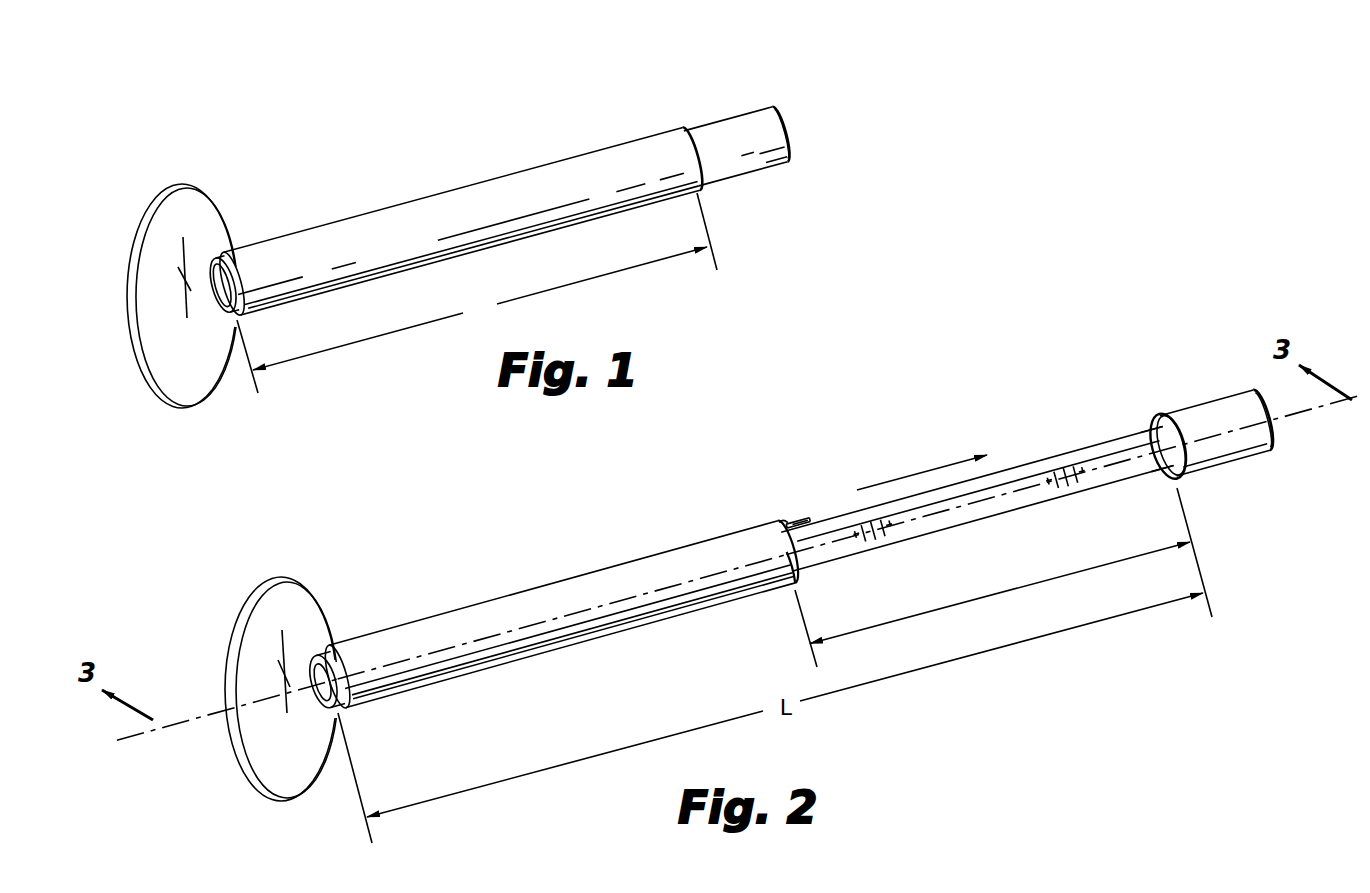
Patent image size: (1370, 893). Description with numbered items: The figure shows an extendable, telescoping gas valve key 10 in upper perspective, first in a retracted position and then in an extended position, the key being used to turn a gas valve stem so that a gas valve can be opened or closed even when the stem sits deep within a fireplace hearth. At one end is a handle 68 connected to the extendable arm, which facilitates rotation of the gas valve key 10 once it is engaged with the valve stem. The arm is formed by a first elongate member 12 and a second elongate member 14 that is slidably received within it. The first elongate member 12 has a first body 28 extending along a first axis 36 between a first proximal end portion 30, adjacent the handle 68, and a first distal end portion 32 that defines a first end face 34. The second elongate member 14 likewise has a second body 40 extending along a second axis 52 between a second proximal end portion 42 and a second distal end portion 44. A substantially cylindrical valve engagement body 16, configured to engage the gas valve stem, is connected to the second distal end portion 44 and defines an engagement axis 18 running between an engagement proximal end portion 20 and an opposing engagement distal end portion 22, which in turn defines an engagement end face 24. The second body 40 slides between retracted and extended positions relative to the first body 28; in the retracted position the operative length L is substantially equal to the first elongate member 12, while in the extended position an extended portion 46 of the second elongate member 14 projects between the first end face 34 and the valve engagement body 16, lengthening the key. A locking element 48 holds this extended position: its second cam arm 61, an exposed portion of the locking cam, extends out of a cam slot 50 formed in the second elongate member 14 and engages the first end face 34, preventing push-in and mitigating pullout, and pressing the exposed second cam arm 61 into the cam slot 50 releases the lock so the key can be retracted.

In FIG. 1, the gas valve key 10 is at (302, 112).
In FIG. 1, the first elongate member 12 is at (470, 166).
In FIG. 2, the first elongate member 12 is at (530, 582).
In FIG. 2, the second elongate member 14 is at (1078, 441).
In FIG. 1, the valve engagement body 16 is at (727, 119).
In FIG. 2, the valve engagement body 16 is at (1213, 411).
In FIG. 2, the engagement axis 18 is at (1215, 444).
In FIG. 2, the engagement proximal end portion 20 is at (1170, 426).
In FIG. 2, the engagement distal end portion 22 is at (1250, 393).
In FIG. 2, the engagement end face 24 is at (1268, 446).
In FIG. 1, the first body 28 is at (575, 161).
In FIG. 2, the first body 28 is at (601, 583).
In FIG. 1, the first proximal end portion 30 is at (253, 246).
In FIG. 2, the first proximal end portion 30 is at (357, 646).
In FIG. 1, the first distal end portion 32 is at (673, 136).
In FIG. 2, the first distal end portion 32 is at (768, 528).
In FIG. 2, the first end face 34 is at (802, 579).
In FIG. 2, the first axis 36 is at (433, 650).
In FIG. 2, the second body 40 is at (1050, 461).
In FIG. 2, the second proximal end portion 42 is at (841, 561).
In FIG. 2, the second distal end portion 44 is at (1146, 436).
In FIG. 2, the extended portion 46 is at (963, 604).
In FIG. 2, the locking element 48 is at (797, 513).
In FIG. 2, the cam slot 50 is at (815, 521).
In FIG. 2, the second axis 52 is at (975, 511).
In FIG. 2, the second cam arm 61 is at (790, 527).
In FIG. 1, the handle 68 is at (202, 380).
In FIG. 2, the handle 68 is at (303, 783).